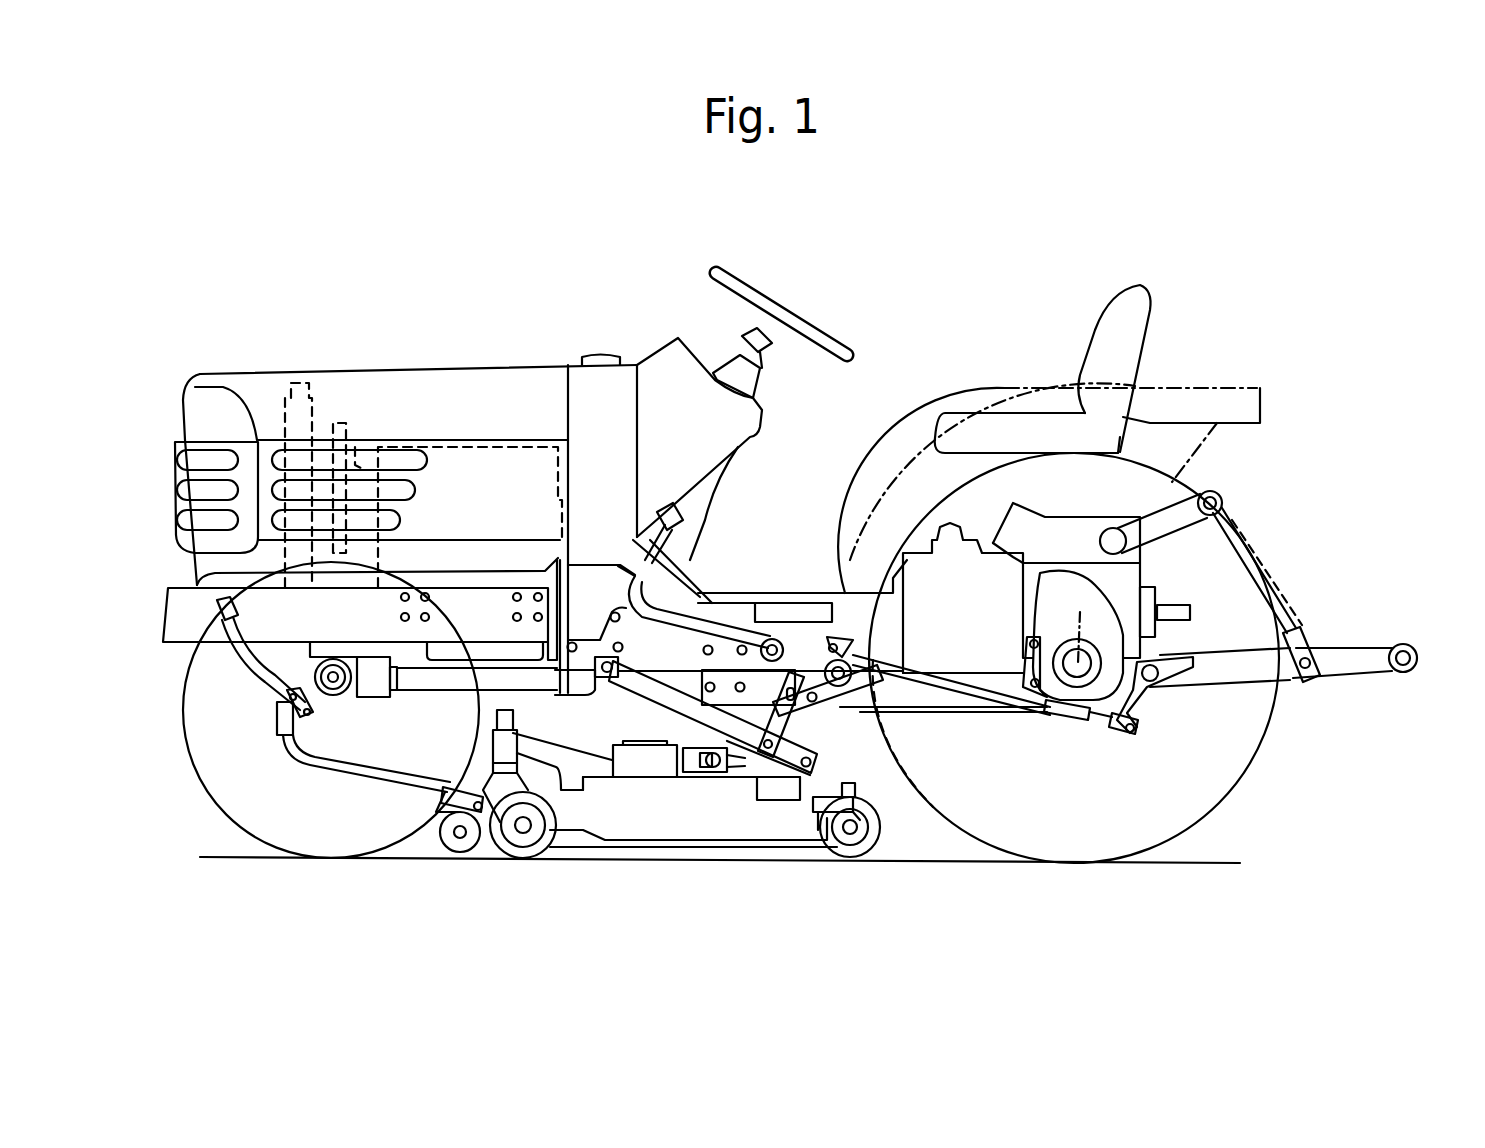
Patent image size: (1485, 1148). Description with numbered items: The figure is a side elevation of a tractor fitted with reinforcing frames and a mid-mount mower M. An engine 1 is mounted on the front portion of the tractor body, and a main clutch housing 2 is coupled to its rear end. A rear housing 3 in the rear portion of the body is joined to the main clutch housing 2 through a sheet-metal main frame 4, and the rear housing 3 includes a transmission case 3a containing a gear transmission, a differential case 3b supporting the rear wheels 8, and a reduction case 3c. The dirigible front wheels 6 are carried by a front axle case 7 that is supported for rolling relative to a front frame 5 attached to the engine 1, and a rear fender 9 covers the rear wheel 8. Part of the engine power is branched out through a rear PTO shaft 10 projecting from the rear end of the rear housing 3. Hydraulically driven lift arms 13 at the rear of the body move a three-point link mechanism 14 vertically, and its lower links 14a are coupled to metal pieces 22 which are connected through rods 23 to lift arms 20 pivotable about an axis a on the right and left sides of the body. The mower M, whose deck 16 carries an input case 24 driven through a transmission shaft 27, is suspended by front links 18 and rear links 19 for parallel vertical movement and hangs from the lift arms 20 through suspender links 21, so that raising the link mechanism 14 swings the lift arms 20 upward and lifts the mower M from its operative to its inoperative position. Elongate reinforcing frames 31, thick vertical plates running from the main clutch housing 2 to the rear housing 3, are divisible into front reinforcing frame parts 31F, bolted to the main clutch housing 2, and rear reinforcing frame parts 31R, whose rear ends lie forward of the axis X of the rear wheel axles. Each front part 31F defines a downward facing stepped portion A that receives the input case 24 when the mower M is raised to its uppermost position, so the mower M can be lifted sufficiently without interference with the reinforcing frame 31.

The engine 1 is at (455, 440).
The main clutch housing 2 is at (584, 575).
The rear housing 3 is at (1042, 550).
The transmission case 3a is at (933, 567).
The differential case 3b is at (1137, 570).
The reduction case 3c is at (1083, 700).
The main frame 4 is at (756, 597).
The front frame 5 is at (413, 637).
The front wheels 6 is at (208, 797).
The front axle case 7 is at (337, 700).
The rear wheels 8 is at (1255, 770).
The rear fender 9 is at (855, 562).
The rear PTO shaft 10 is at (1192, 612).
The lift arms 13 is at (1157, 522).
The three-point link mechanism 14 is at (1341, 686).
The lower links 14a is at (1336, 652).
The deck 16 is at (740, 830).
The front links 18 is at (390, 787).
The rear links 19 is at (670, 747).
The lift arms 20 is at (812, 668).
The suspender links 21 is at (787, 760).
The metal pieces 22 is at (1153, 713).
The rods 23 is at (987, 687).
The input case 24 is at (617, 760).
The transmission shaft 27 is at (825, 723).
The reinforcing frames 31 is at (933, 708).
The front reinforcing frame parts 31F is at (662, 647).
The rear reinforcing frame parts 31R is at (977, 708).
The stepped portion A is at (683, 675).
The axis a is at (867, 720).
The mid-mount mower M is at (661, 845).
The axis of the rear wheel axles X is at (1078, 622).